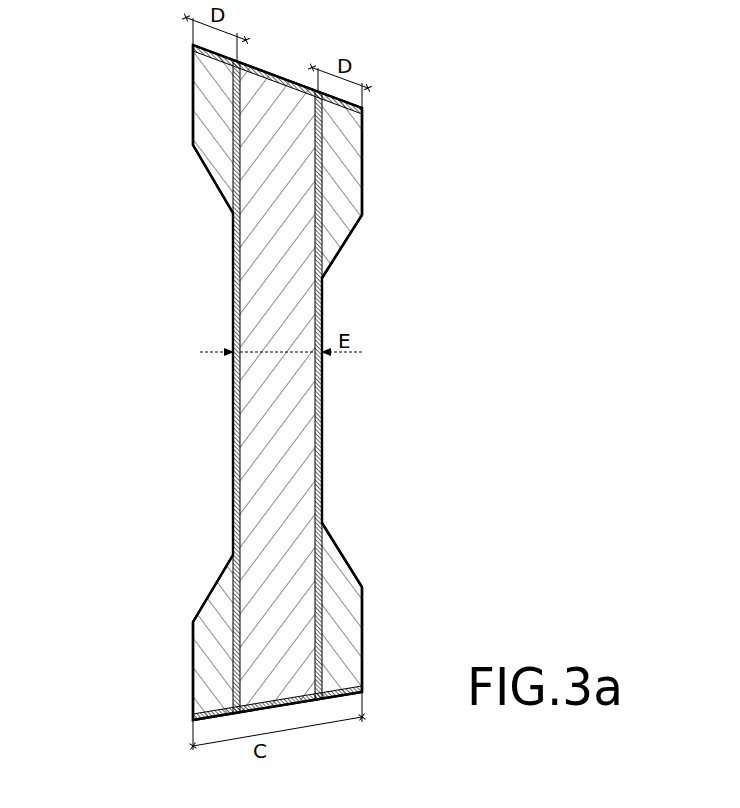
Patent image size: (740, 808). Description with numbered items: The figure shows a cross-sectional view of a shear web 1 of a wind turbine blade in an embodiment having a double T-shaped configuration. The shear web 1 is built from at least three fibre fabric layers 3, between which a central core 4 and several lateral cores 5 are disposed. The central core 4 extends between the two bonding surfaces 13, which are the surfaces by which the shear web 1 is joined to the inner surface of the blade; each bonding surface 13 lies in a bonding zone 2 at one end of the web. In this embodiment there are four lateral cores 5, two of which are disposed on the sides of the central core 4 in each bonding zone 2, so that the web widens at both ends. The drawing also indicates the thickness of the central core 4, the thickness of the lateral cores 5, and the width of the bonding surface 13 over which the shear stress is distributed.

The shear web 1 is at (405, 308).
The bonding zone 2 is at (390, 150).
The fibre fabric layer 3 is at (320, 191).
The central core 4 is at (295, 445).
The lateral core 5 is at (215, 104).
The bonding surface 13 is at (285, 72).